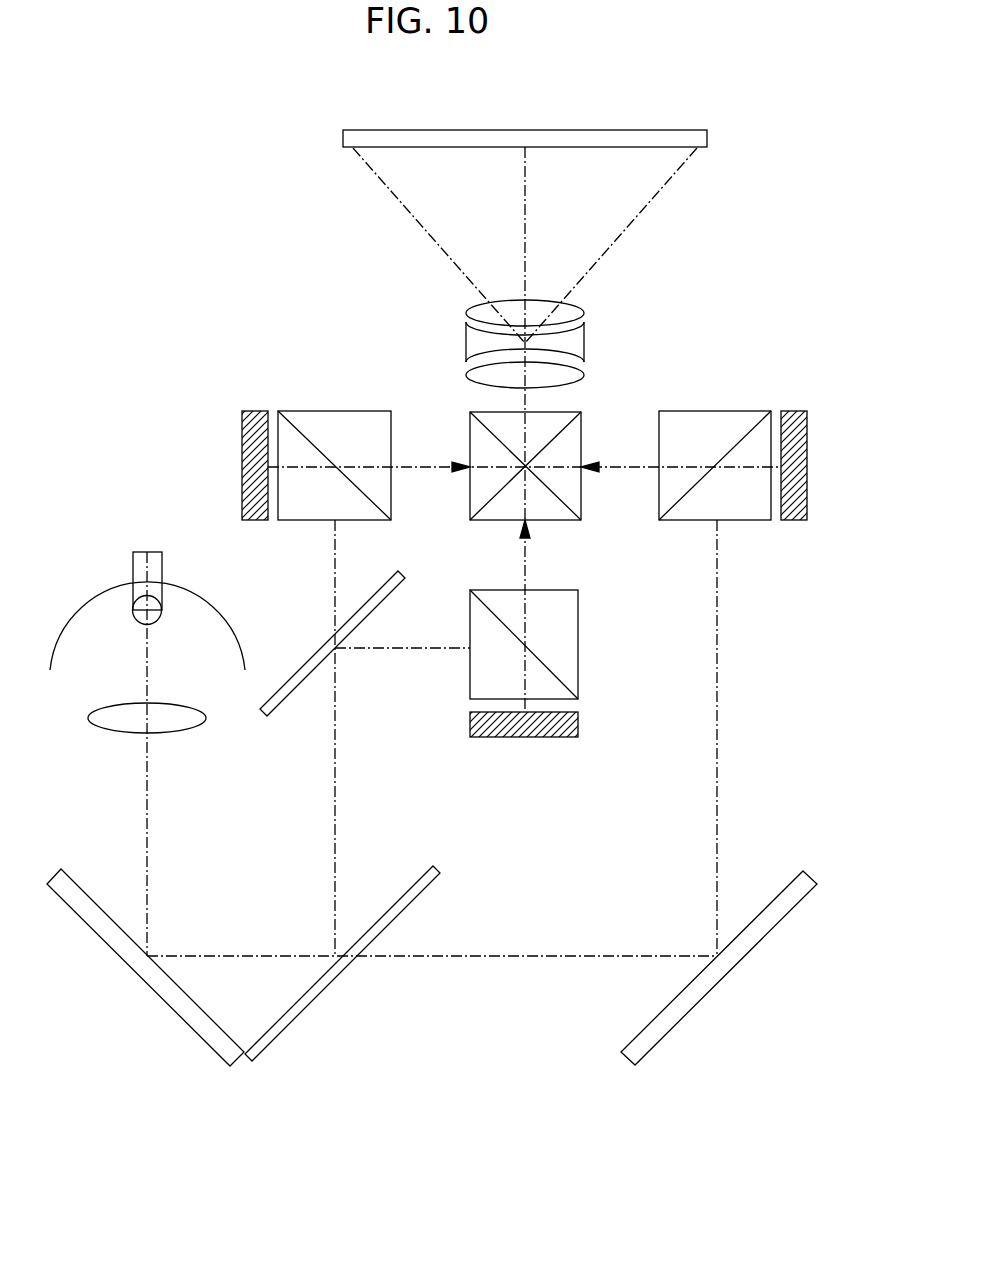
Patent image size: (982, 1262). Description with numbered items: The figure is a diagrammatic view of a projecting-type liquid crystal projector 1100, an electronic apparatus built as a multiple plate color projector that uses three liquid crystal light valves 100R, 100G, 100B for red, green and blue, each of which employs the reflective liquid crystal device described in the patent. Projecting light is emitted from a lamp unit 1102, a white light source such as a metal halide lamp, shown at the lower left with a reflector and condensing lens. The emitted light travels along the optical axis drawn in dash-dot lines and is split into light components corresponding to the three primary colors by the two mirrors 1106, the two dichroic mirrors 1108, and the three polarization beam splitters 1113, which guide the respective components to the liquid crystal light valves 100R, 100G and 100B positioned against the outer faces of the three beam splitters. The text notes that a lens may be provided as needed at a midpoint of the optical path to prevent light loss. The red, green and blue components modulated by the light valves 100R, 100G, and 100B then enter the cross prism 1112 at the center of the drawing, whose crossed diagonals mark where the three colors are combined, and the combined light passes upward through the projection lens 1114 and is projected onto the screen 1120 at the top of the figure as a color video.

The liquid crystal projector 1100 is at (280, 103).
The screen 1120 is at (648, 133).
The projection lens 1114 is at (461, 389).
The cross prism 1112 is at (553, 411).
The polarization beam splitter 1113 is at (328, 425).
The liquid crystal light valve 100B is at (258, 521).
The liquid crystal light valve 100R is at (797, 521).
The liquid crystal light valve 100G is at (540, 738).
The lamp unit 1102 is at (72, 617).
The dichroic mirror 1108 is at (292, 692).
The mirror 1106 is at (152, 975).